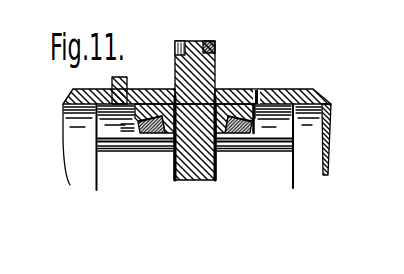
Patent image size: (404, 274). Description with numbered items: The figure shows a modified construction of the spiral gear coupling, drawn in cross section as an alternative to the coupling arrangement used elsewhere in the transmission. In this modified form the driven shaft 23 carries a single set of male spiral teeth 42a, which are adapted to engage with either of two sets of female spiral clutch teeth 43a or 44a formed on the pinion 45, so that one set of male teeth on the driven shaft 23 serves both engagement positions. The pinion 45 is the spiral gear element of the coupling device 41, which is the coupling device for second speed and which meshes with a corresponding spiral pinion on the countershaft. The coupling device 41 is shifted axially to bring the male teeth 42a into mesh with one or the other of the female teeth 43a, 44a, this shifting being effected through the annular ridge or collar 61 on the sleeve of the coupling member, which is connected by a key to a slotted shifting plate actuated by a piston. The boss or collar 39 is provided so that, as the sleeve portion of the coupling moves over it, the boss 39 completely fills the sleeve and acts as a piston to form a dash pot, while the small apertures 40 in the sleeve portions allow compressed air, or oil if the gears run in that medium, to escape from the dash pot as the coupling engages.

The driven shaft 23 is at (272, 146).
The boss or collar 39 is at (72, 127).
The apertures 40 is at (132, 90).
The coupling device 41 is at (302, 91).
The male spiral teeth 42a is at (192, 150).
The female spiral clutch teeth 43a is at (246, 133).
The female spiral clutch teeth 44a is at (157, 132).
The spiral pinion 45 is at (215, 63).
The annular ridge or collar 61 is at (129, 77).